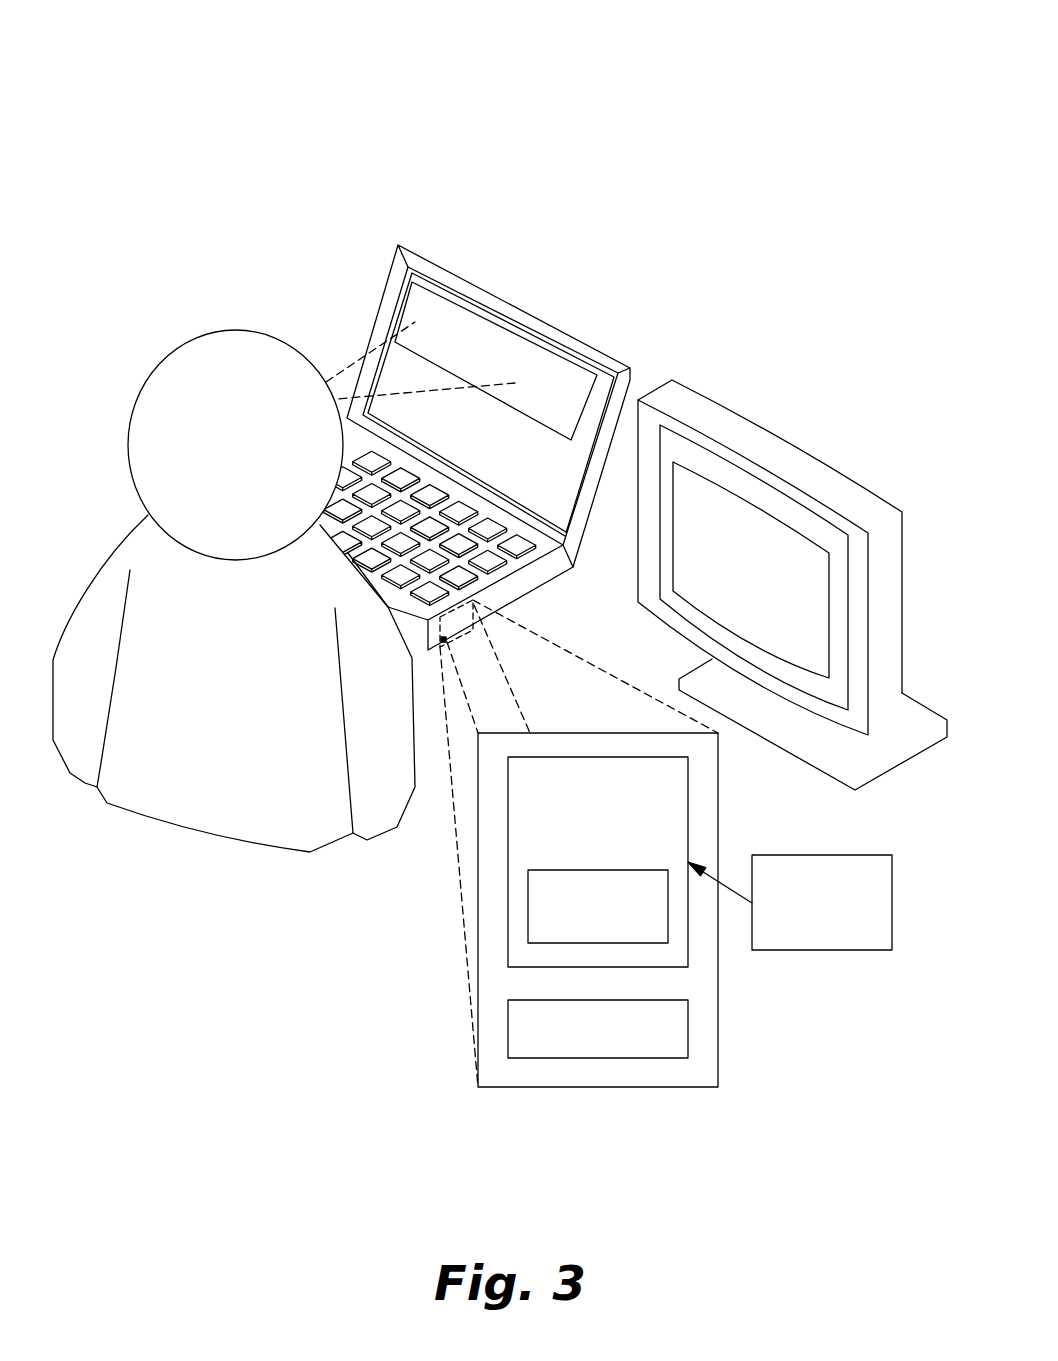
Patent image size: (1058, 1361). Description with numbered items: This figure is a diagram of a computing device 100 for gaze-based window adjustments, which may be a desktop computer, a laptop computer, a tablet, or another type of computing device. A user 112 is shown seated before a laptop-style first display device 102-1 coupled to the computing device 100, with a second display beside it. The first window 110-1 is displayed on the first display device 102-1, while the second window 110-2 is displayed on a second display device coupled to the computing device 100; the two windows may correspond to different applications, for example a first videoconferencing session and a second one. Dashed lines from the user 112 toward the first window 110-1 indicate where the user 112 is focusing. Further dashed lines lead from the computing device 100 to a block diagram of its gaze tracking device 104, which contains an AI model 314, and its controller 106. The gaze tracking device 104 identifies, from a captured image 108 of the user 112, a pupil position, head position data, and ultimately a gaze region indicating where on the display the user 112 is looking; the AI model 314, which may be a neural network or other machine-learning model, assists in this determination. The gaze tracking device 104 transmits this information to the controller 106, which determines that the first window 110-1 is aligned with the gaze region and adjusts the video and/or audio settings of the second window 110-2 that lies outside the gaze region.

The computing device 100 is at (315, 88).
The first display device 102-1 is at (397, 272).
The first window 110-1 is at (463, 338).
The second window 110-2 is at (750, 528).
The user 112 is at (225, 347).
The gaze tracking device 104 is at (578, 846).
The AI model 314 is at (578, 933).
The controller 106 is at (578, 1048).
The captured image 108 is at (802, 941).